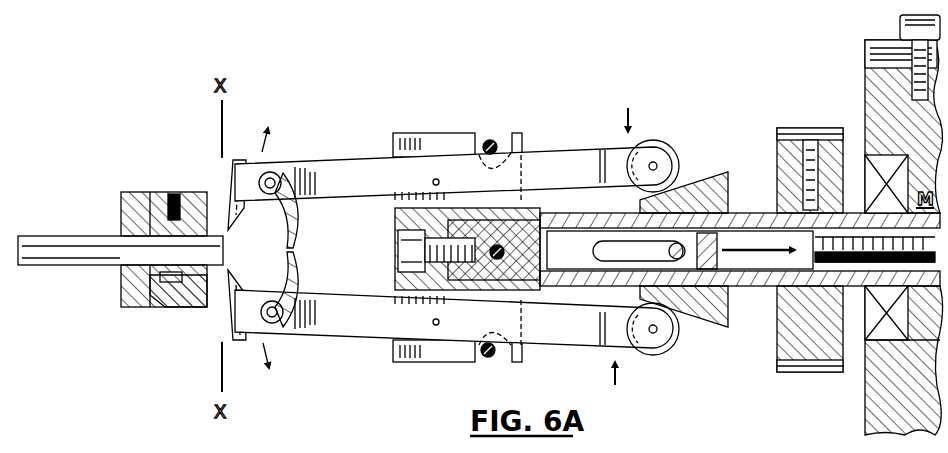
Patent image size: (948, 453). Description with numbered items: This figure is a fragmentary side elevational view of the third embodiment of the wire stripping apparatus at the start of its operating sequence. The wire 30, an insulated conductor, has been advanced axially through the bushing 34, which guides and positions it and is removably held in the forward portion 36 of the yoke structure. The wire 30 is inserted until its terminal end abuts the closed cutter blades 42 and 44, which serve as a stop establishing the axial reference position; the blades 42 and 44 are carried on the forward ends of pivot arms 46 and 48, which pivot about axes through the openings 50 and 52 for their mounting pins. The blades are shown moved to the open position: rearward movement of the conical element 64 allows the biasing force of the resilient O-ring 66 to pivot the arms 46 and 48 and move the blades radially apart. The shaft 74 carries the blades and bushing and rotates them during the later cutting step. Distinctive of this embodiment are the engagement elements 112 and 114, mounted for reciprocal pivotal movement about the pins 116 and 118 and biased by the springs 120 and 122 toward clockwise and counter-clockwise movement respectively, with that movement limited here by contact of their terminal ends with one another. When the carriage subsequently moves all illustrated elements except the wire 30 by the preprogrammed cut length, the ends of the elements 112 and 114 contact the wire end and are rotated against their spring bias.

The wire 30 is at (93, 236).
The bushing 34 is at (122, 296).
The forward portion of yoke structure 36 is at (177, 307).
The cutter blade 42 is at (237, 216).
The cutter blade 44 is at (237, 276).
The pivot arm 46 is at (368, 160).
The pivot arm 48 is at (372, 341).
The opening for arm mounting pin 50 is at (433, 181).
The opening for arm mounting pin 52 is at (433, 322).
The conical element 64 is at (690, 323).
The resilient O-ring 66 is at (492, 142).
The shaft 74 is at (562, 215).
The engagement element 112 is at (300, 221).
The engagement element 114 is at (295, 276).
The pin 116 is at (272, 172).
The pin 118 is at (276, 324).
The spring 120 is at (300, 166).
The spring 122 is at (293, 326).